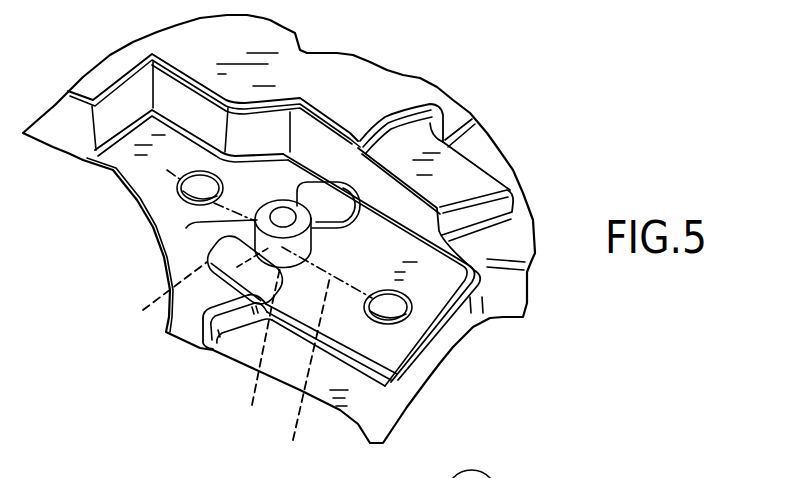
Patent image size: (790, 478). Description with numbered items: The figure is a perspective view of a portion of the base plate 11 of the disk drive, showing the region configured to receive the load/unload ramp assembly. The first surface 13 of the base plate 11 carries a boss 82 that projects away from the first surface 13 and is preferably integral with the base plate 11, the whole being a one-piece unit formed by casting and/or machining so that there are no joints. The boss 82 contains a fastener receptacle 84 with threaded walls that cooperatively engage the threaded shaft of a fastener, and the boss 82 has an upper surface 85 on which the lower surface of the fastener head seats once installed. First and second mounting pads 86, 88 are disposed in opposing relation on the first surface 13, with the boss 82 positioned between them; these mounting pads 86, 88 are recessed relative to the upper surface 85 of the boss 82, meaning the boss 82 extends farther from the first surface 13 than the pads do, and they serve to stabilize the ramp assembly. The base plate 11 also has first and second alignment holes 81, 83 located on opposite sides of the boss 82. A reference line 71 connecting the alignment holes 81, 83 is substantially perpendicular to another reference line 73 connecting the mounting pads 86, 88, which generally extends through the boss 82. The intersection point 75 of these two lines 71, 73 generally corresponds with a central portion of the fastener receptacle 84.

The base plate 11 is at (508, 102).
The first surface 13 is at (423, 320).
The reference line 71 is at (305, 371).
The reference line 73 is at (160, 293).
The intersection point 75 is at (260, 350).
The first alignment hole 81 is at (387, 323).
The boss 82 is at (186, 228).
The second alignment hole 83 is at (182, 184).
The fastener receptacle 84 is at (287, 208).
The upper surface 85 is at (310, 230).
The first mounting pad 86 is at (233, 285).
The second mounting pad 88 is at (333, 200).